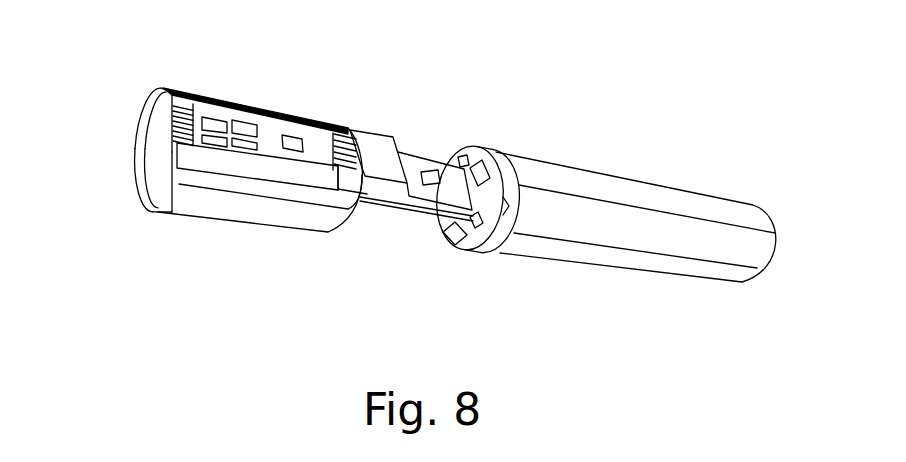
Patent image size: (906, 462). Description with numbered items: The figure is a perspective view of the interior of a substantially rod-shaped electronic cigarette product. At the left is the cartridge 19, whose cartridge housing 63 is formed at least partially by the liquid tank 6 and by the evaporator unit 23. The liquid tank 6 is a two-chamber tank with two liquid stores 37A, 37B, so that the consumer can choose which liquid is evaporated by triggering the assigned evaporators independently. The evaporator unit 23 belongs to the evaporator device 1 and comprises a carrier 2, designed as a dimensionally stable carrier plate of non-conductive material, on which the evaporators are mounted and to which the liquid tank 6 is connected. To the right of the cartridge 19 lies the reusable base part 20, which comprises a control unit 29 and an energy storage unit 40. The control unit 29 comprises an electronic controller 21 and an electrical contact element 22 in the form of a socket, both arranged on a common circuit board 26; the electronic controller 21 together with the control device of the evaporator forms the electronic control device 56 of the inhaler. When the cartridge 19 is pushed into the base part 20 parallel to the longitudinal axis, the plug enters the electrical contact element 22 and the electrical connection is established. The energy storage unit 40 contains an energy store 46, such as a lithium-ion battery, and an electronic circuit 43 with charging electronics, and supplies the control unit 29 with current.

The evaporator device 1 is at (255, 158).
The carrier 2 is at (285, 183).
The liquid tank 6 is at (229, 229).
The cartridge 19 is at (180, 85).
The base part 20 is at (604, 219).
The electronic controller 21 is at (427, 168).
The electrical contact element 22 is at (371, 192).
The evaporator unit 23 is at (255, 110).
The circuit board 26 is at (424, 176).
The control unit 29 is at (406, 218).
The liquid store 37A is at (152, 150).
The liquid store 37B is at (187, 203).
The energy storage unit 40 is at (636, 230).
The electronic circuit 43 is at (480, 147).
The energy store 46 is at (597, 170).
The electronic control device 56 is at (412, 117).
The cartridge housing 63 is at (232, 95).